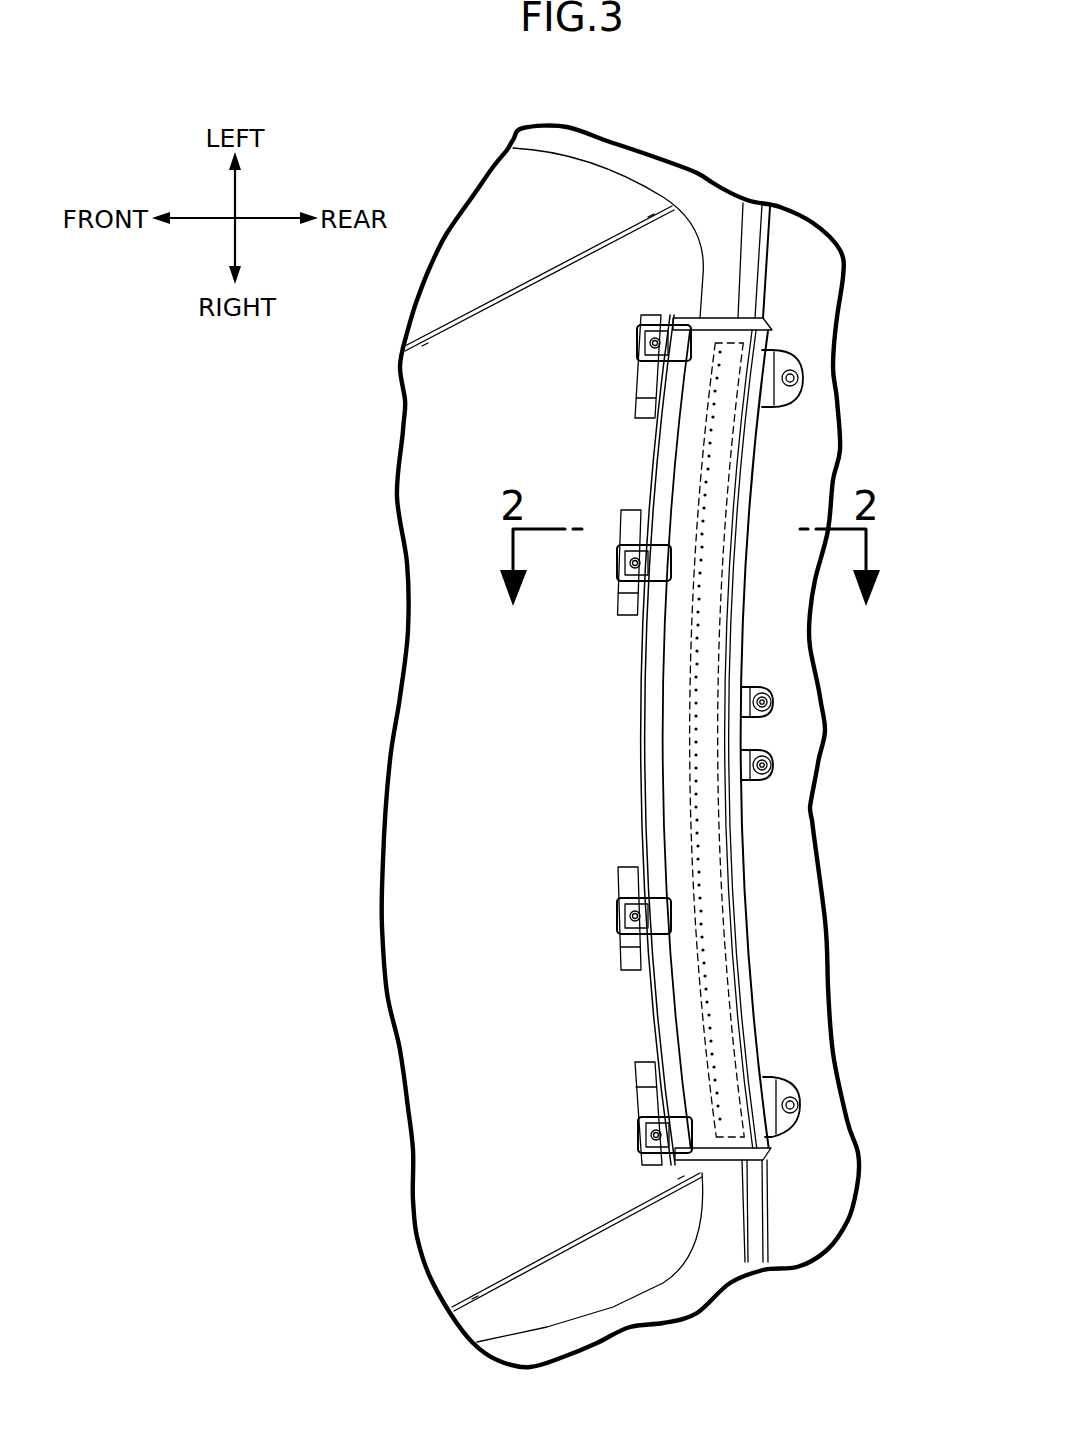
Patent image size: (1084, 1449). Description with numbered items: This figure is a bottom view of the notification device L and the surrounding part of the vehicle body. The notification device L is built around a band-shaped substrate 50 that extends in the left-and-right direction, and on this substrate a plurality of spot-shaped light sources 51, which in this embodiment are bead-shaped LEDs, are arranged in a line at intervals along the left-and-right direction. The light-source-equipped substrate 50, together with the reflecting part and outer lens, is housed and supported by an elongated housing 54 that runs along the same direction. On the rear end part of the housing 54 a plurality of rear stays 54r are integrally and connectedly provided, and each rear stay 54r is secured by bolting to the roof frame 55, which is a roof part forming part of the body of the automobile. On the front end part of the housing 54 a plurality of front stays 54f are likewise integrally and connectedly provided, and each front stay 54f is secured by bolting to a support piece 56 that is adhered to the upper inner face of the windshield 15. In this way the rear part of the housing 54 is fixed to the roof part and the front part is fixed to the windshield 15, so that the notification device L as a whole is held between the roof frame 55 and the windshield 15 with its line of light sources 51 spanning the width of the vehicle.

The windshield 15 is at (492, 698).
The band-shaped substrate 50 is at (728, 462).
The spot-shaped light sources 51 is at (697, 717).
The housing 54 is at (628, 787).
The front stays 54f is at (642, 1133).
The rear stays 54r is at (777, 764).
The roof frame 55 is at (795, 662).
The support piece 56 is at (623, 885).
The notification device L is at (762, 927).